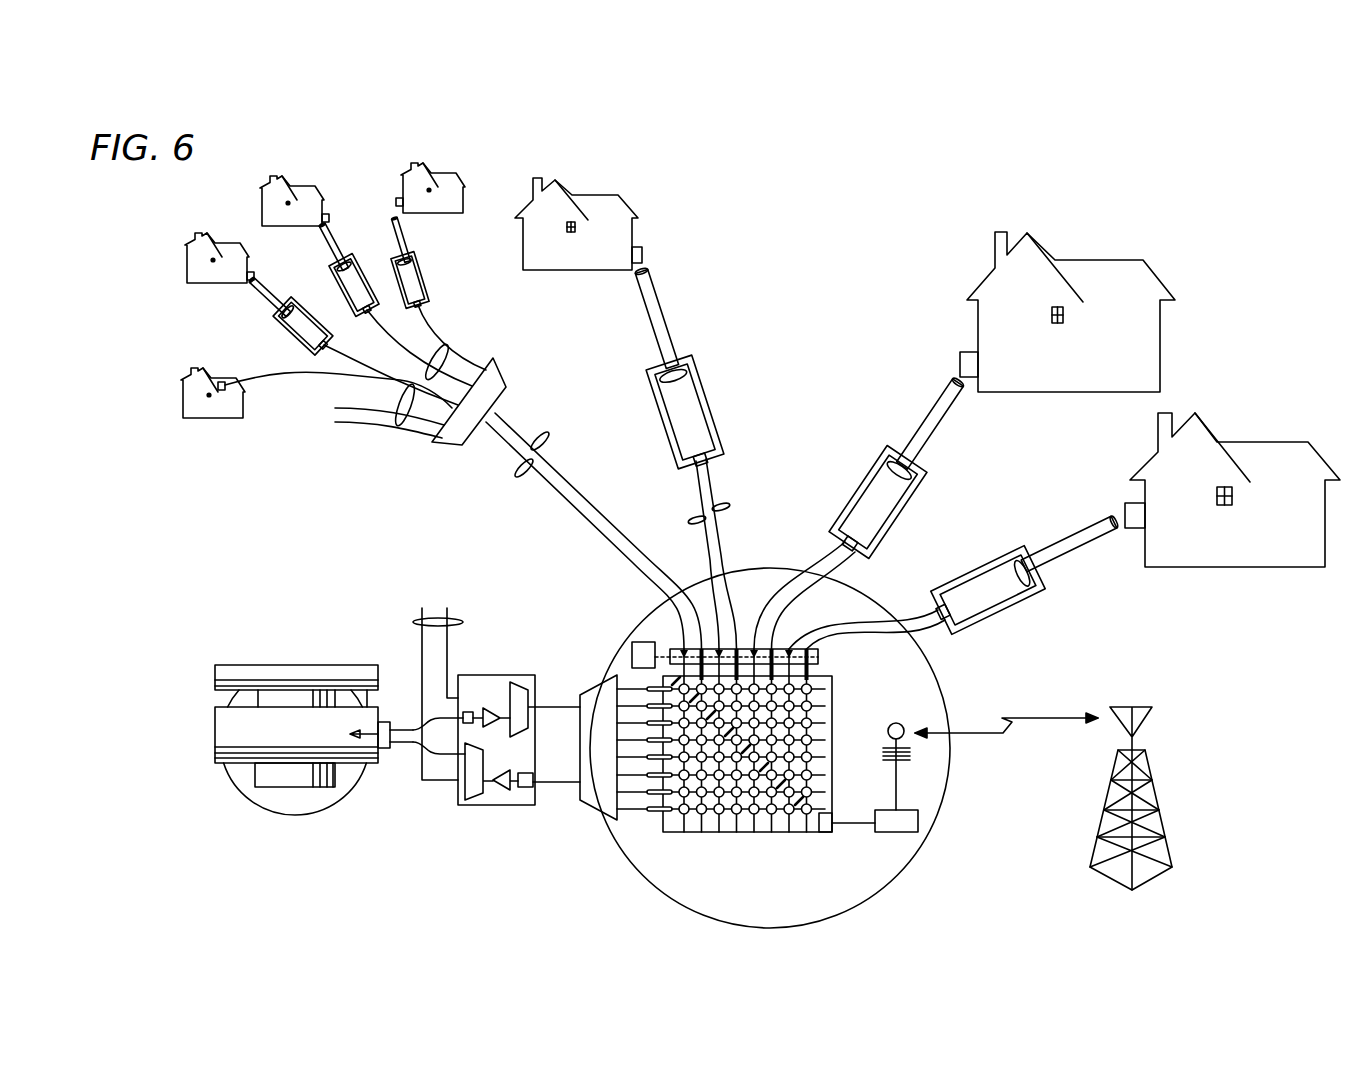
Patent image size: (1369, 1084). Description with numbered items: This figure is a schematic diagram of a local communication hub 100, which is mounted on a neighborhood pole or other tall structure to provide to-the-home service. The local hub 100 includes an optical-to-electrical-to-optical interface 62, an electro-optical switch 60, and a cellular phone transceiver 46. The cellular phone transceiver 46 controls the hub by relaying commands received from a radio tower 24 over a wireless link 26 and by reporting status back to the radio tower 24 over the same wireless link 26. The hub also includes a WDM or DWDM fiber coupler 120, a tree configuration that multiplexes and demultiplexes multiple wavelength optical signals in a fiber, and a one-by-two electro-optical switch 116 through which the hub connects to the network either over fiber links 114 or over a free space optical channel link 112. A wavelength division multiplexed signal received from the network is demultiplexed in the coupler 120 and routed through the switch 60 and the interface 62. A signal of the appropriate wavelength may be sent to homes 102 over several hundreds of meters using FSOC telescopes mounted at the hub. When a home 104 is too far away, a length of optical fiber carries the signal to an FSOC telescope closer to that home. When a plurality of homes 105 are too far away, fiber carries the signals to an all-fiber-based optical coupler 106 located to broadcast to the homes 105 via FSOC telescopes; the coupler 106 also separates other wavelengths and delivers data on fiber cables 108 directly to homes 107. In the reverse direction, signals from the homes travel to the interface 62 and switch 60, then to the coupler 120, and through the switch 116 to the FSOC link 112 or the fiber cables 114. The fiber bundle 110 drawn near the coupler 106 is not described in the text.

The radio tower 24 is at (1160, 820).
The wireless link 26 is at (1020, 716).
The cellular phone transceiver 46 is at (895, 828).
The electro-optical switch 60 is at (755, 810).
The optical-to-electrical-to-optical interface 62 is at (820, 658).
The local hub 100 is at (675, 898).
The homes 102 is at (1103, 265).
The home 104 is at (592, 200).
The plurality of homes 105 is at (222, 247).
The all-fiber-based optical coupler 106 is at (497, 378).
The homes 107 is at (193, 370).
The fiber cables 108 is at (398, 428).
The fiber bundle 110 is at (440, 350).
The free space optical channel (FSOC) link 112 is at (285, 812).
The fiber links 114 is at (462, 622).
The 1×2 electro-optical switch 116 is at (497, 805).
The WDM or DWDM fiber coupler 120 is at (588, 705).